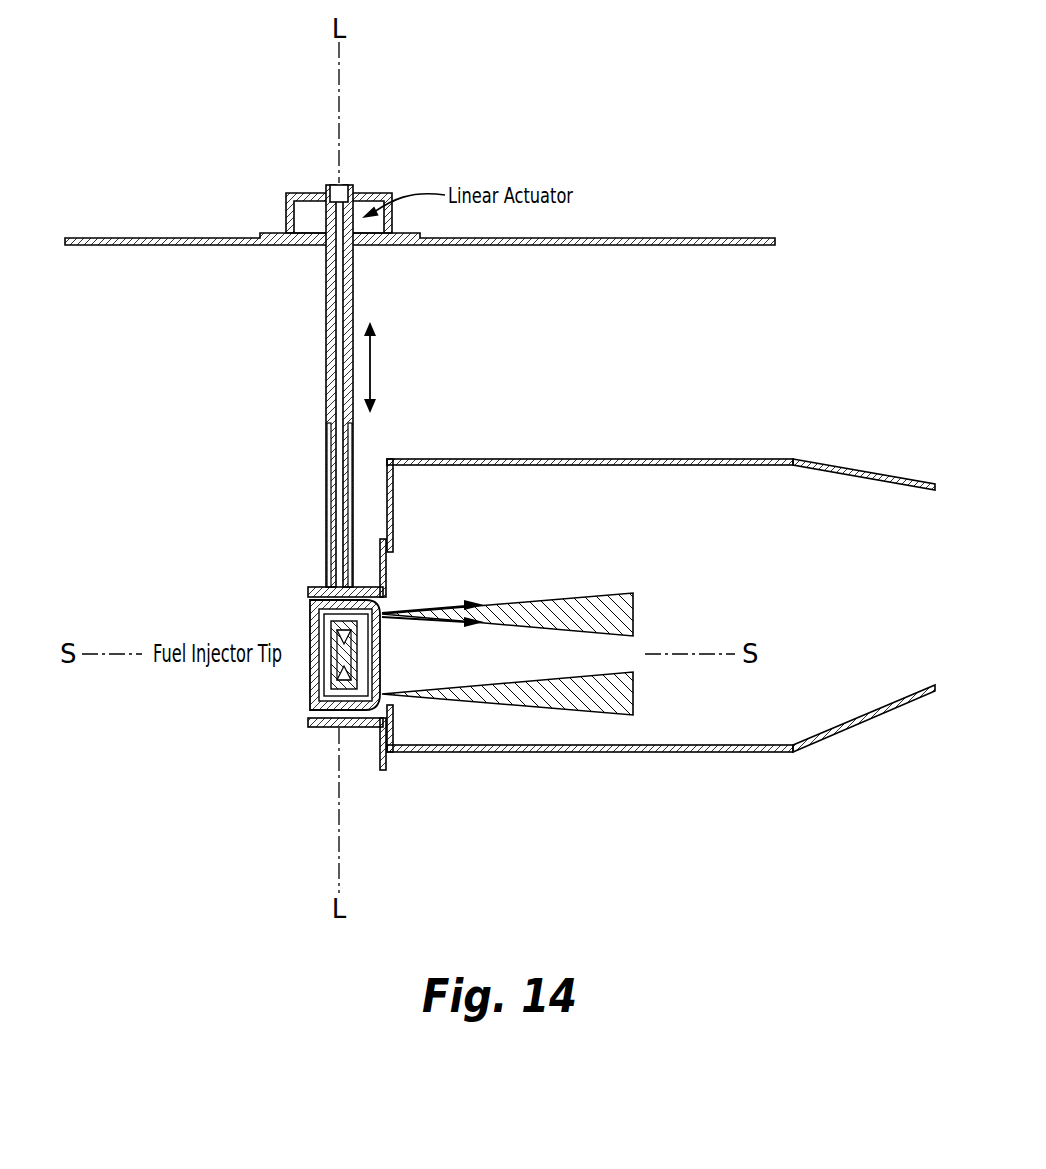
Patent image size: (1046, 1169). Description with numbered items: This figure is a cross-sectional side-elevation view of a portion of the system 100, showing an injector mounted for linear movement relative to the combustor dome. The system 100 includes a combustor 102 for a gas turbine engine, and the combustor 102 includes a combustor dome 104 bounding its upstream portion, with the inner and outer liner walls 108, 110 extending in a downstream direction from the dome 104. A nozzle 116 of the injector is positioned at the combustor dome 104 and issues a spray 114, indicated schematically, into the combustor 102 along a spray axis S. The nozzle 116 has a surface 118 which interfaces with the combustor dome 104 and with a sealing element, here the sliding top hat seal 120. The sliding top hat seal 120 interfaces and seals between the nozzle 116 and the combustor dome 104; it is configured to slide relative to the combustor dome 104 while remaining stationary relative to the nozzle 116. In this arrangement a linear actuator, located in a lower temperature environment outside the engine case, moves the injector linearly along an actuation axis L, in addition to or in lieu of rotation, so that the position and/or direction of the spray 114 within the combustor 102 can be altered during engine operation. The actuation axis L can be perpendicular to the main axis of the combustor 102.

The system 100 is at (773, 155).
The combustor 102 is at (682, 459).
The combustor dome 104 is at (395, 510).
The inner liner wall 108 is at (762, 745).
The outer liner wall 110 is at (843, 462).
The spray 114 is at (596, 606).
The nozzle 116 is at (257, 710).
The surface 118 is at (310, 714).
The sliding top hat seal 120 is at (313, 571).